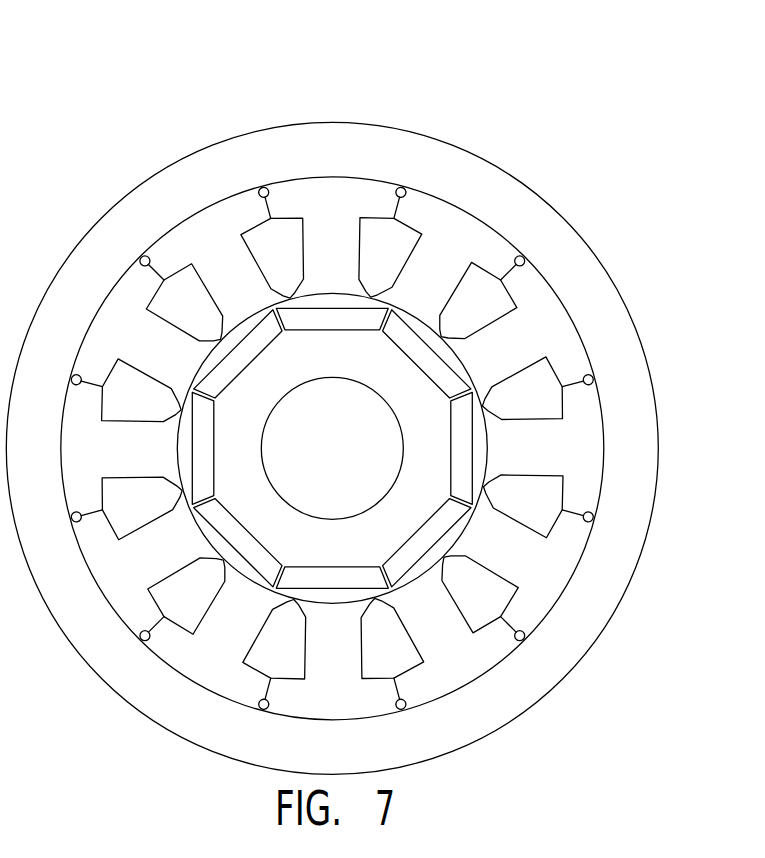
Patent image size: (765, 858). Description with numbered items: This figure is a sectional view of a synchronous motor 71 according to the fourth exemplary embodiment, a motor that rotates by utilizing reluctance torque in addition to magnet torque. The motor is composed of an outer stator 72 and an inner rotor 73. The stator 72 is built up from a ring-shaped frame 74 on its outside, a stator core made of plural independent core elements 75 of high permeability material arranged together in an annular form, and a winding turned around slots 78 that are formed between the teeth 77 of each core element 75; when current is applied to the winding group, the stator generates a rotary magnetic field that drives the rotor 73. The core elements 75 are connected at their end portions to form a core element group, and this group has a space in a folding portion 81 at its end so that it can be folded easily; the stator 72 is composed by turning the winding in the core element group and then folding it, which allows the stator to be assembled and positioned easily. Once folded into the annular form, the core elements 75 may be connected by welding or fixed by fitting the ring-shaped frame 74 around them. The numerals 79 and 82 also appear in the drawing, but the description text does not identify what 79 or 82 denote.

The synchronous motor 71 is at (332, 392).
The stator 72 is at (332, 412).
The rotor 73 is at (449, 448).
The ring-shaped frame 74 is at (369, 448).
The core element 75 is at (626, 345).
The tooth 77 is at (530, 260).
The slot 78 is at (542, 411).
The winding 79 is at (417, 199).
The folding portion 81 is at (223, 148).
The permanent magnet 82 is at (332, 196).